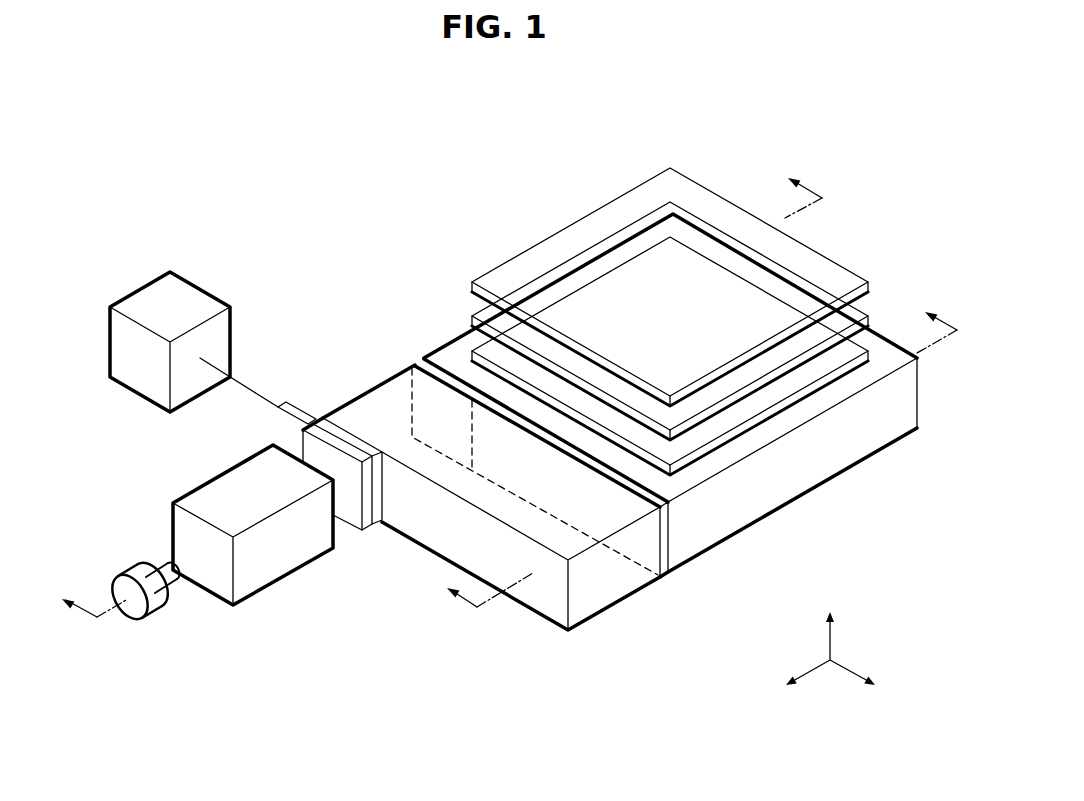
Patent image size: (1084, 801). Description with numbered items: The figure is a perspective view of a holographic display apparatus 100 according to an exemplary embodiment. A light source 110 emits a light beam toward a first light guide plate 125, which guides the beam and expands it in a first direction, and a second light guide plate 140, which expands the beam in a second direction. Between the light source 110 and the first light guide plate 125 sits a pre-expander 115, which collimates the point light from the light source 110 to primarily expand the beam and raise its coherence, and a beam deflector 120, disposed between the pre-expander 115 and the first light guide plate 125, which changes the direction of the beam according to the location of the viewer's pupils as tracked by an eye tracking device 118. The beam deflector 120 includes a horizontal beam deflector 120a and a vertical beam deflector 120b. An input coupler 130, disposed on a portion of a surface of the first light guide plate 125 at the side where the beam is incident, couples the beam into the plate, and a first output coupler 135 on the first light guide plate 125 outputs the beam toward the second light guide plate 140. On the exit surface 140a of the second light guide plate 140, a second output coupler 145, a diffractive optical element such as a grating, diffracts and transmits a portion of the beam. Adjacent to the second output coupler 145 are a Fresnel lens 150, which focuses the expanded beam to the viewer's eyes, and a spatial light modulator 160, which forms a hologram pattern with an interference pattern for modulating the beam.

The holographic display apparatus 100 is at (308, 228).
The light source 110 is at (133, 577).
The pre-expander 115 is at (235, 478).
The eye tracking device 118 is at (150, 290).
The beam deflector 120 is at (322, 586).
The horizontal beam deflector 120a is at (357, 521).
The vertical beam deflector 120b is at (377, 522).
The first light guide plate 125 is at (610, 587).
The input coupler 130 is at (419, 389).
The first output coupler 135 is at (662, 540).
The second light guide plate 140 is at (805, 475).
The exit surface 140a is at (803, 411).
The second output coupler 145 is at (472, 356).
The Fresnel lens 150 is at (472, 320).
The spatial light modulator 160 is at (472, 287).